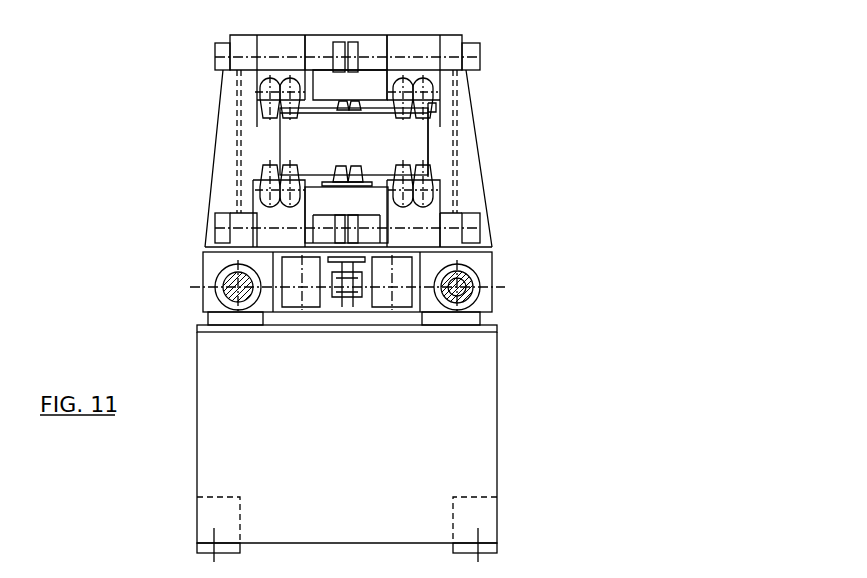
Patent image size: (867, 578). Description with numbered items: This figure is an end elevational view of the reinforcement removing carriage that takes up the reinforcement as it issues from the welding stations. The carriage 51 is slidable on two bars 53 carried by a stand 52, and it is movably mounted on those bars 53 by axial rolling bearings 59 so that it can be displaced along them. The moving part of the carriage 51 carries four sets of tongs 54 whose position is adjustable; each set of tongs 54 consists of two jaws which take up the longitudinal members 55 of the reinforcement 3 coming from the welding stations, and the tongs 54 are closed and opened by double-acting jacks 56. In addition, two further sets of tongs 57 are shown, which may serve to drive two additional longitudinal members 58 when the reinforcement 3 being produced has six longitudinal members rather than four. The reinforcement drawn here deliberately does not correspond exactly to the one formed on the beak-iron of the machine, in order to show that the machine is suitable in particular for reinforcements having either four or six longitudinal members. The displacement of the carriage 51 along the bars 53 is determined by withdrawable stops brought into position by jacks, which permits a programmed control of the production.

The workpiece plate 3 is at (430, 137).
The carriage 51 is at (492, 247).
The stand 52 is at (472, 350).
The bars 53 is at (238, 292).
The sets of tongs 54 is at (272, 96).
The longitudinal members 55 is at (434, 112).
The double-acting jacks 56 is at (327, 55).
The sets of tongs 57 is at (343, 107).
The additional longitudinal members 58 is at (355, 107).
The axial rolling bearings 59 is at (465, 284).